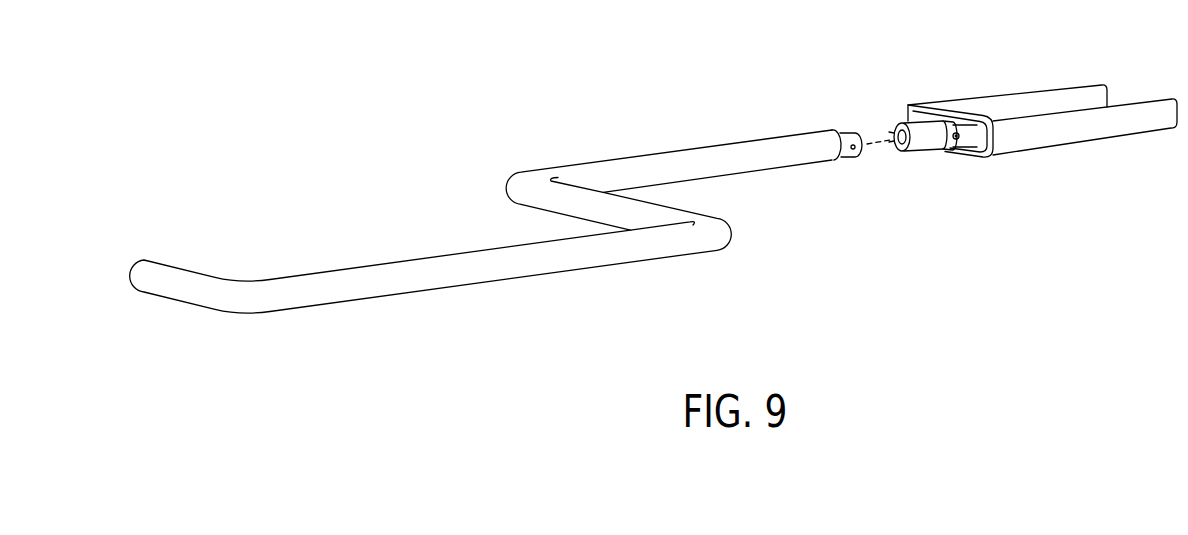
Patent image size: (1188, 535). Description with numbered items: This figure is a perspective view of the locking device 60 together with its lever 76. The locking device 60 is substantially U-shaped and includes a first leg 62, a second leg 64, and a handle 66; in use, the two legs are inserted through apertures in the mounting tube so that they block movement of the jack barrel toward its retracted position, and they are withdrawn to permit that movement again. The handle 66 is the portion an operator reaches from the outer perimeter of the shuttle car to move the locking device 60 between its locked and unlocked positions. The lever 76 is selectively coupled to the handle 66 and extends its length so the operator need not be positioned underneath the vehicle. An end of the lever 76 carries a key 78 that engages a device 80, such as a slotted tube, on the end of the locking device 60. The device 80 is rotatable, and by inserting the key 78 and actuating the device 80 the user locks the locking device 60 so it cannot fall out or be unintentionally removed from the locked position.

The locking device 60 is at (1042, 149).
The first leg 62 is at (1033, 100).
The second leg 64 is at (1122, 127).
The handle 66 is at (967, 146).
The lever 76 is at (545, 265).
The key 78 is at (854, 132).
The device 80 is at (906, 116).